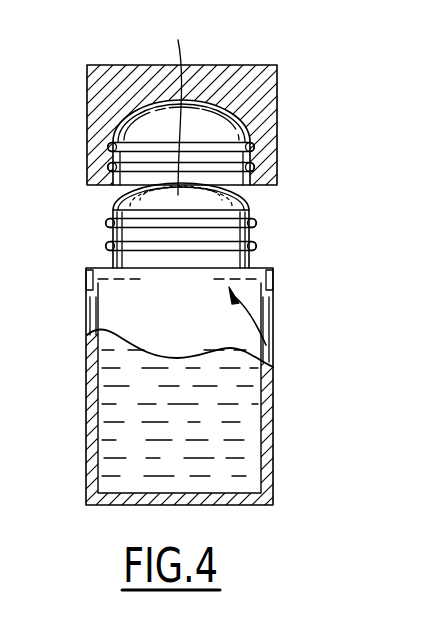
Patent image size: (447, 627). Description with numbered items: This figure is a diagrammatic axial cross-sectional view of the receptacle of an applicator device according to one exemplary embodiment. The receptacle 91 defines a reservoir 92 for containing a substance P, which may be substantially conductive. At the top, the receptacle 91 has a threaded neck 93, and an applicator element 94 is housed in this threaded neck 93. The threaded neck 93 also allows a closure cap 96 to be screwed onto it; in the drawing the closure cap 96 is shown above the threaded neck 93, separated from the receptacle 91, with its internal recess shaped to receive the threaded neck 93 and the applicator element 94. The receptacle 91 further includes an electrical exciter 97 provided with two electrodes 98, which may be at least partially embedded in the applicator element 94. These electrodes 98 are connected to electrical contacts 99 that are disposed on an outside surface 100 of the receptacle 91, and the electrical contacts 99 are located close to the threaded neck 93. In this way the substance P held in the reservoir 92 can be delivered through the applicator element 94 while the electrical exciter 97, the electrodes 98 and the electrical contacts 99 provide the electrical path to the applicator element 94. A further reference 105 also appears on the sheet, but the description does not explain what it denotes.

The receptacle 91 is at (274, 437).
The reservoir 92 is at (118, 446).
The threaded neck 93 is at (112, 247).
The applicator element 94 is at (177, 105).
The closure cap 96 is at (103, 114).
The electrical exciter 97 is at (273, 334).
The electrodes 98 is at (145, 199).
The electrical contacts 99 is at (86, 283).
The outside surface 100 is at (277, 318).
The element 105 is at (446, 512).
The substance P is at (118, 385).